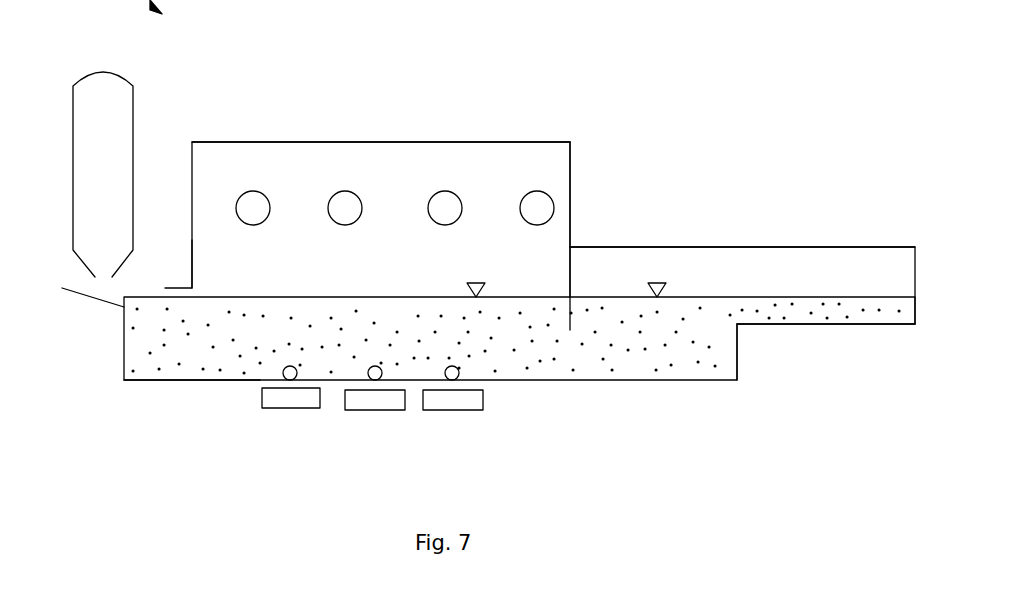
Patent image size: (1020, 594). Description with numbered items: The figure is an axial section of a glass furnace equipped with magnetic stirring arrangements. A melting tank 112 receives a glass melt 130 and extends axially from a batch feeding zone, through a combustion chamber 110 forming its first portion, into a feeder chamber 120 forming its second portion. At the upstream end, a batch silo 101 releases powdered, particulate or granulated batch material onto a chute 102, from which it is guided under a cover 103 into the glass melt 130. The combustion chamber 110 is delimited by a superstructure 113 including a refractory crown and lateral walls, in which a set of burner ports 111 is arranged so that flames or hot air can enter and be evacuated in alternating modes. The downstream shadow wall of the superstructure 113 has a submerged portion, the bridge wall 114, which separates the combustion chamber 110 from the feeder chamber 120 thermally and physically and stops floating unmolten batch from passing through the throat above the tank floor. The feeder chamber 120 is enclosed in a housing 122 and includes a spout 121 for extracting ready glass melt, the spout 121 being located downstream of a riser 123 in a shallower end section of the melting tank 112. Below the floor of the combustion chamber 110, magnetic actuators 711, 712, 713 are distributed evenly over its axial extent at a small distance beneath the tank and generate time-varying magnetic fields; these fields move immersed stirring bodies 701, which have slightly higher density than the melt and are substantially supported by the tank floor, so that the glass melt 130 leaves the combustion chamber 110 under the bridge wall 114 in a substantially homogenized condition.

The batch silo 101 is at (73, 137).
The chute 102 is at (85, 296).
The cover 103 is at (170, 288).
The combustion chamber 110 is at (412, 186).
The burner ports 111 is at (534, 191).
The melting tank 112 is at (227, 376).
The superstructure 113 is at (243, 142).
The bridge wall 114 is at (568, 310).
The feeder chamber 120 is at (730, 282).
The spout 121 is at (872, 326).
The housing 122 is at (753, 247).
The riser 123 is at (736, 350).
The glass melt 130 is at (598, 374).
The stirring body 701 is at (283, 372).
The magnetic actuator 711 is at (283, 408).
The magnetic actuator 712 is at (368, 410).
The magnetic actuator 713 is at (452, 410).